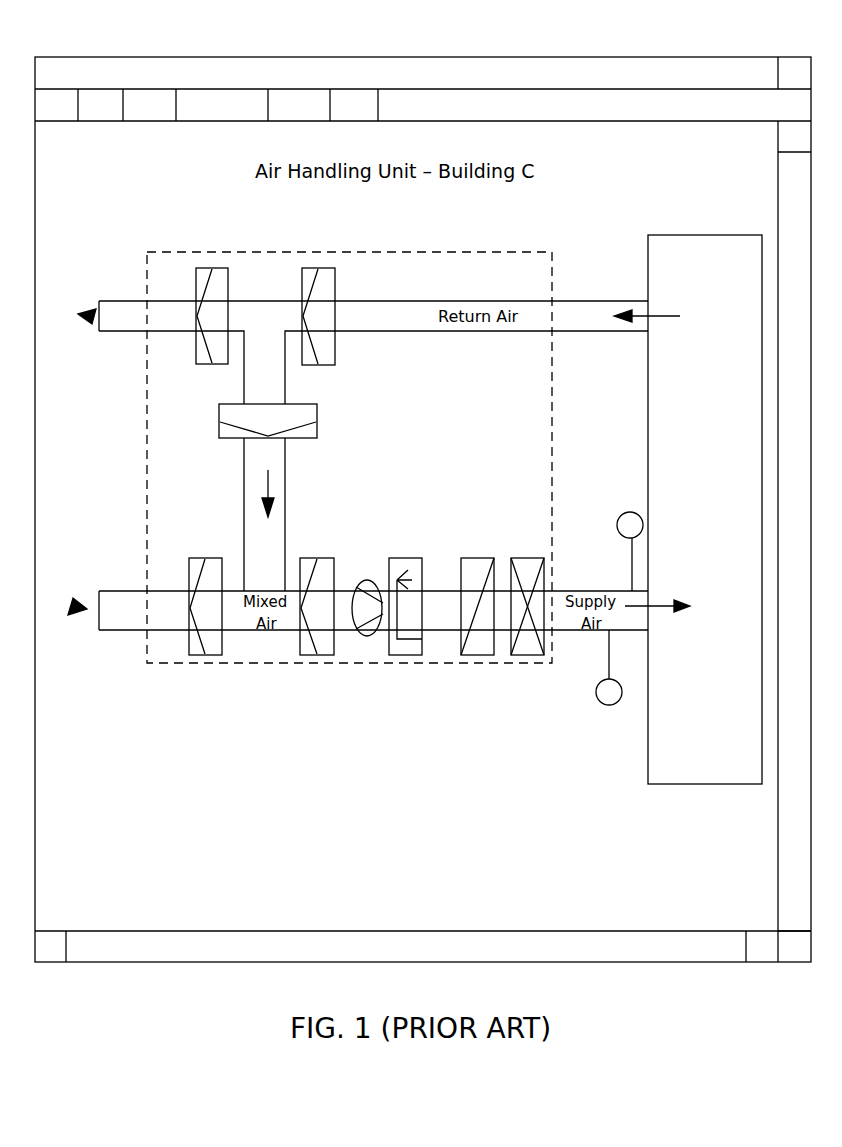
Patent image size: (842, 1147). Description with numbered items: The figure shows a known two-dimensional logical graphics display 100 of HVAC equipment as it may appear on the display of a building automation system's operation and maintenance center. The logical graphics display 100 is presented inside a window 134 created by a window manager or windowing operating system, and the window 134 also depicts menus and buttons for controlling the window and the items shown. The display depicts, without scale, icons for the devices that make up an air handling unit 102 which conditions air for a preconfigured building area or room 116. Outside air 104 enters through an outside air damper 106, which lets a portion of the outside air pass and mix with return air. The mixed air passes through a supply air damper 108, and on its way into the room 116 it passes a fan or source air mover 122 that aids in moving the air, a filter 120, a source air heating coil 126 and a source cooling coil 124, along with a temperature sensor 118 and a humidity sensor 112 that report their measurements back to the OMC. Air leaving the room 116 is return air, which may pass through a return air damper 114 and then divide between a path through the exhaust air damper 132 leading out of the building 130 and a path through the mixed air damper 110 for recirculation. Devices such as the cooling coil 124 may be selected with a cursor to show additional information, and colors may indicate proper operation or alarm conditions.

The logical graphics display 100 is at (173, 179).
The air handling unit 102 is at (349, 457).
The outside air 104 is at (74, 603).
The outside air damper 106 is at (217, 651).
The supply air damper 108 is at (306, 558).
The mixed air damper 110 is at (308, 439).
The humidity sensor 112 is at (604, 706).
The return air damper 114 is at (334, 365).
The building/room 116 is at (705, 509).
The temperature sensor 118 is at (622, 514).
The filter 120 is at (413, 648).
The fan or source air mover 122 is at (369, 581).
The source cooling coil 124 is at (528, 651).
The source air heating coil 126 is at (474, 647).
The out of the building 130 is at (90, 325).
The exhaust air damper 132 is at (197, 364).
The window 134 is at (633, 57).